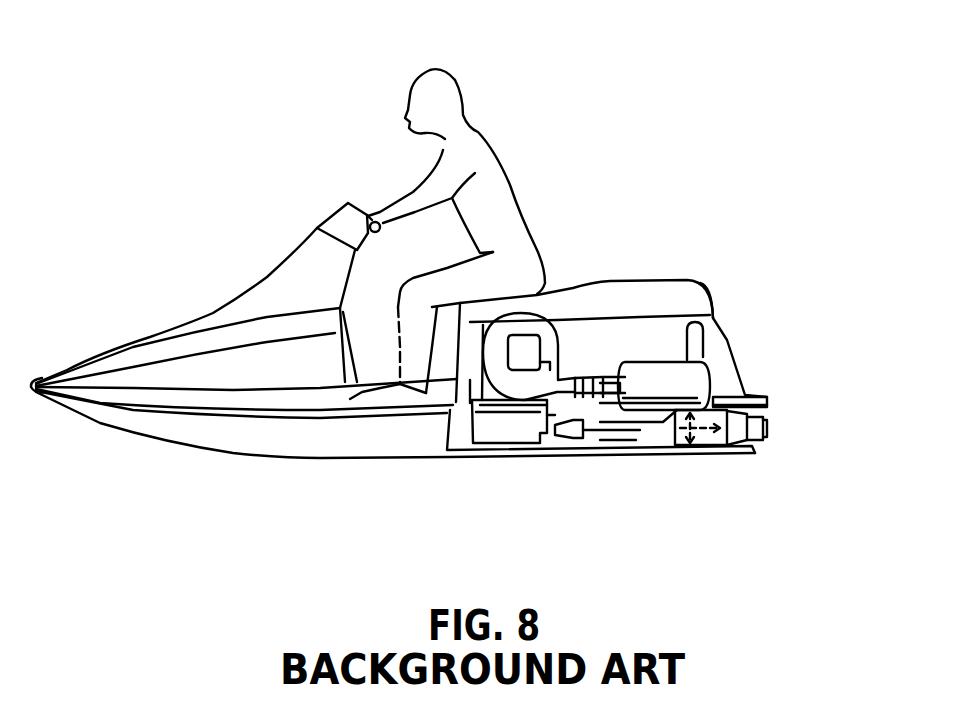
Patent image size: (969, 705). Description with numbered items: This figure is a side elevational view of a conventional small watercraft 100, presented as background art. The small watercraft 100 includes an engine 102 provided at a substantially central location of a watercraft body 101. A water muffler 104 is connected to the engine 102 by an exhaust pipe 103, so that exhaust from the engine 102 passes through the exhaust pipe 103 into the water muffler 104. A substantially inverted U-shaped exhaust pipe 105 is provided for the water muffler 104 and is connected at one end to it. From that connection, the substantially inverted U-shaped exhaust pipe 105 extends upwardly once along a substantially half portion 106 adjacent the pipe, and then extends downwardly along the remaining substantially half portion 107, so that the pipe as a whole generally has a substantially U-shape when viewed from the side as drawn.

The small watercraft 100 is at (311, 153).
The watercraft body 101 is at (228, 440).
The engine 102 is at (497, 423).
The exhaust pipe 103 is at (567, 387).
The water muffler 104 is at (652, 375).
The substantially inverted U-shaped exhaust pipe 105 is at (712, 318).
The half portion 106 is at (697, 350).
The remaining half portion 107 is at (747, 428).